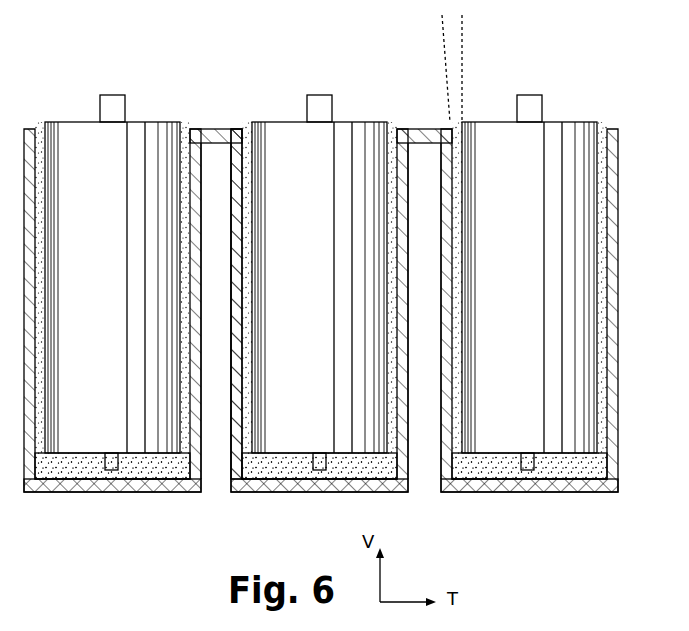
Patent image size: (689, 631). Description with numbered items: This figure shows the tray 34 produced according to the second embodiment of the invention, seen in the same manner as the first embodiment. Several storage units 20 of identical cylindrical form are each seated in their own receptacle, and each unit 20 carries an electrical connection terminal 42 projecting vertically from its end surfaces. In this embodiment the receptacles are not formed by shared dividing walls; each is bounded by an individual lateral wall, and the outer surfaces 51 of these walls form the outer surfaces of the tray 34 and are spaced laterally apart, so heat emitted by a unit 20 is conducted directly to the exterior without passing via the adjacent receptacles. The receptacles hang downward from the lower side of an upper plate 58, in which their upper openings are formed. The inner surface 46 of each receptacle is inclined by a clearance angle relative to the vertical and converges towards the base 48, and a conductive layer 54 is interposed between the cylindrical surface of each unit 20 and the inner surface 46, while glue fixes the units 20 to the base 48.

The storage unit 20 is at (83, 153).
The tray 34 is at (578, 80).
The electrical connection terminal 42 is at (103, 463).
The inner surface of the receptacle 46 is at (187, 160).
The base of the receptacle 48 is at (96, 493).
The outer surface of the tray 51 is at (231, 479).
The conductive layer 54 is at (252, 122).
The upper plate 58 is at (216, 140).